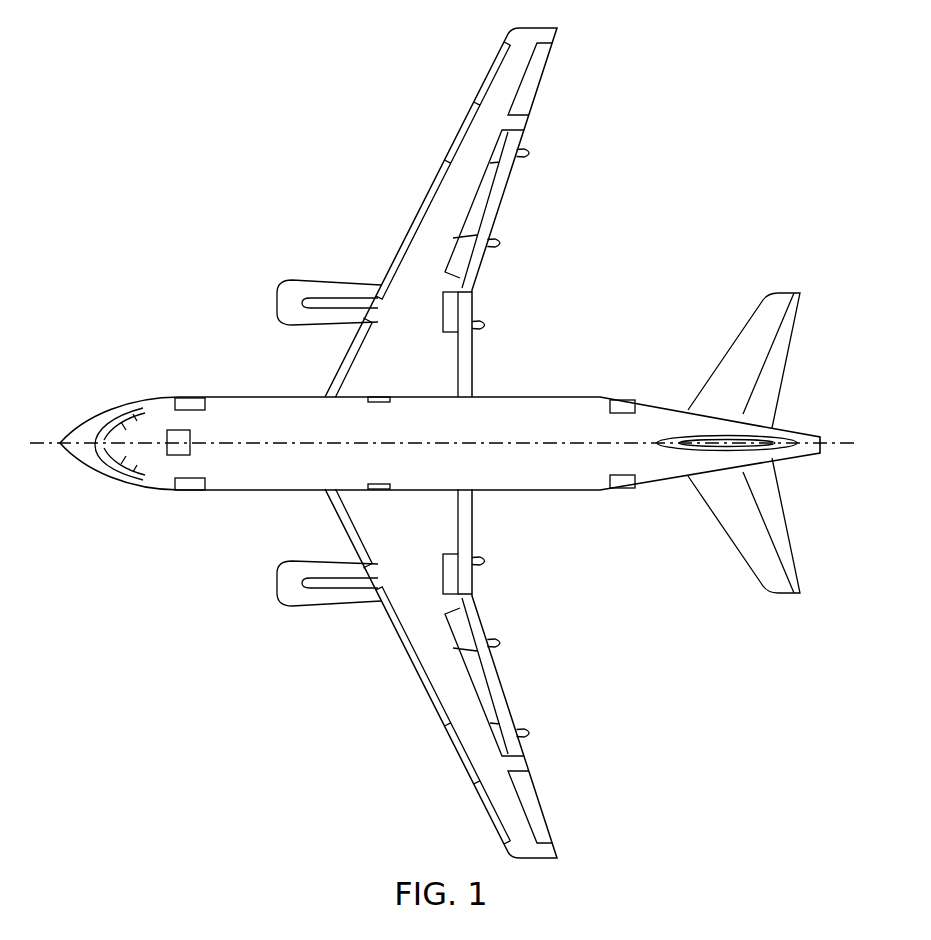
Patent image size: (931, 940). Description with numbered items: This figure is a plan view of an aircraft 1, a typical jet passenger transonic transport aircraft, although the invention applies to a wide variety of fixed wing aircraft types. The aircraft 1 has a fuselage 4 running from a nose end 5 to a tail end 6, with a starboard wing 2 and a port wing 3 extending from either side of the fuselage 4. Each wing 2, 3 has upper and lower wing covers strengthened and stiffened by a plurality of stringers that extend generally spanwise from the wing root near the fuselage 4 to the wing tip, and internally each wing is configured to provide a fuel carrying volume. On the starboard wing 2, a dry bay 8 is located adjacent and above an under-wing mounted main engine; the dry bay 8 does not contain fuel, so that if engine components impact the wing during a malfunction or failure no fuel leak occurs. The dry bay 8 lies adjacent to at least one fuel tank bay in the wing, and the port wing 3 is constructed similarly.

The aircraft 1 is at (445, 443).
The starboard wing 2 is at (417, 671).
The port wing 3 is at (503, 193).
The fuselage 4 is at (268, 417).
The nose end 5 is at (88, 405).
The tail end 6 is at (820, 396).
The dry bay 8 is at (381, 596).